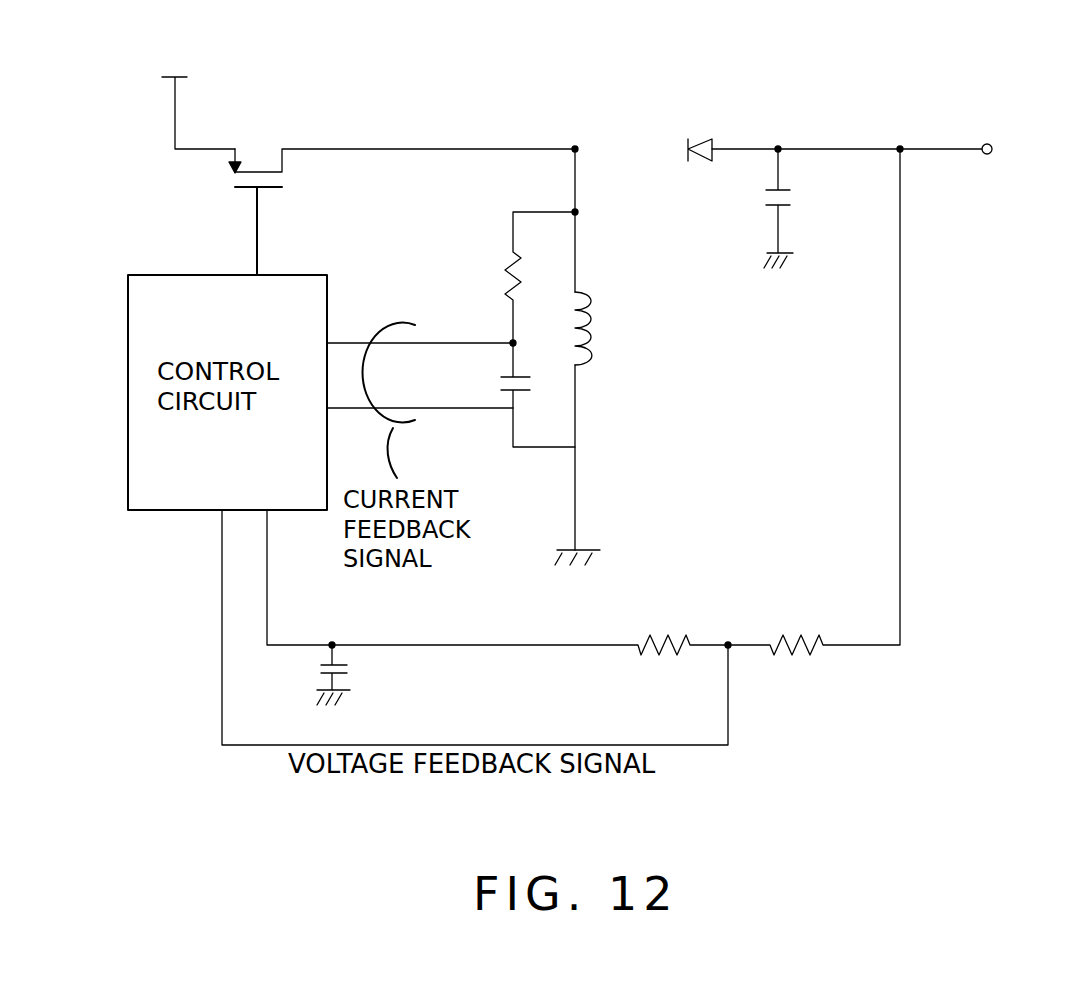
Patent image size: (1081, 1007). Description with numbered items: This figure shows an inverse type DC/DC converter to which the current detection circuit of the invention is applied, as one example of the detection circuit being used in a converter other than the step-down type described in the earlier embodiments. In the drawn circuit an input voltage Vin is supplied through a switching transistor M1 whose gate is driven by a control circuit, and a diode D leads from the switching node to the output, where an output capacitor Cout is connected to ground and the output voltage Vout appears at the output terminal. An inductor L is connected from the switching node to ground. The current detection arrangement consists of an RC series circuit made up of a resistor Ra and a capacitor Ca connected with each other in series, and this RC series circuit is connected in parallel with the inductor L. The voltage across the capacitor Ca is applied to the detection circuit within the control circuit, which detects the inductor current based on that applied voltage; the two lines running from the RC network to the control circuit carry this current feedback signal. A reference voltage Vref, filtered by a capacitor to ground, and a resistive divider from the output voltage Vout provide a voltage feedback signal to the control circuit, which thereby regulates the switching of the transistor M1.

The input voltage terminal Vin is at (196, 95).
The switching transistor M1 is at (402, 196).
The diode D is at (835, 136).
The inductor L is at (598, 328).
The resistor Ra is at (518, 277).
The capacitor Ca is at (518, 393).
The output capacitor Cout is at (808, 207).
The output voltage terminal Vout is at (974, 150).
The reference voltage Vref is at (350, 660).